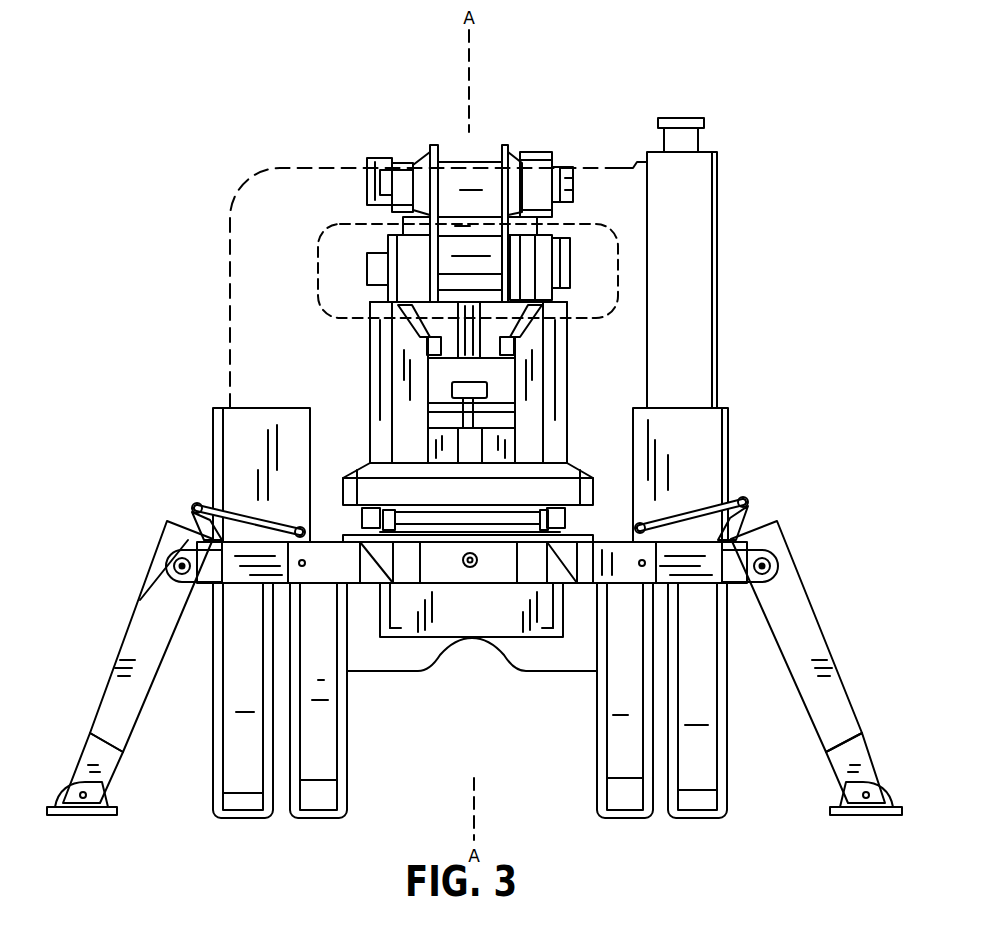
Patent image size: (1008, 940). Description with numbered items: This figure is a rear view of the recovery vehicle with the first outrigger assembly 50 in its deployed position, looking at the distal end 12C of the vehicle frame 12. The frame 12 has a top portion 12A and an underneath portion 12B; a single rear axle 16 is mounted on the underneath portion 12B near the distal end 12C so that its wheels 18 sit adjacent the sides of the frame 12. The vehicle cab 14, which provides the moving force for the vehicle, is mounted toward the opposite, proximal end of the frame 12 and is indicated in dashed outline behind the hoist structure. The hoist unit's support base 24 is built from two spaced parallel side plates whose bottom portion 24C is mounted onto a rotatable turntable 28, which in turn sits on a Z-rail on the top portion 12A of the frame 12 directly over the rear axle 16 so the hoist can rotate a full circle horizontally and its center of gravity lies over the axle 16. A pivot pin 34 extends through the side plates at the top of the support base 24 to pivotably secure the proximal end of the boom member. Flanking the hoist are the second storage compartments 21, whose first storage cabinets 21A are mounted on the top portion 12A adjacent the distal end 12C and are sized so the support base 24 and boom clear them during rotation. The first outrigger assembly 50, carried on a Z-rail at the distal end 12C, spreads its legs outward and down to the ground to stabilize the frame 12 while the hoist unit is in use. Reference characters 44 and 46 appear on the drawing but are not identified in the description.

The vehicle frame 12 is at (510, 623).
The top portion 12A is at (608, 540).
The underneath portion 12B is at (358, 589).
The distal end 12C is at (587, 567).
The vehicle cab 14 is at (276, 270).
The rear axle 16 is at (524, 682).
The wheels 18 is at (243, 806).
The second storage compartments 21 is at (230, 428).
The first storage cabinet 21A is at (262, 469).
The support base 24 is at (543, 380).
The bottom portion 24C is at (517, 445).
The turntable 28 is at (363, 520).
The pivot pin 34 is at (423, 343).
The upper roller 44 is at (533, 163).
The lower roller 46 is at (548, 268).
The first outrigger assembly 50 is at (768, 541).